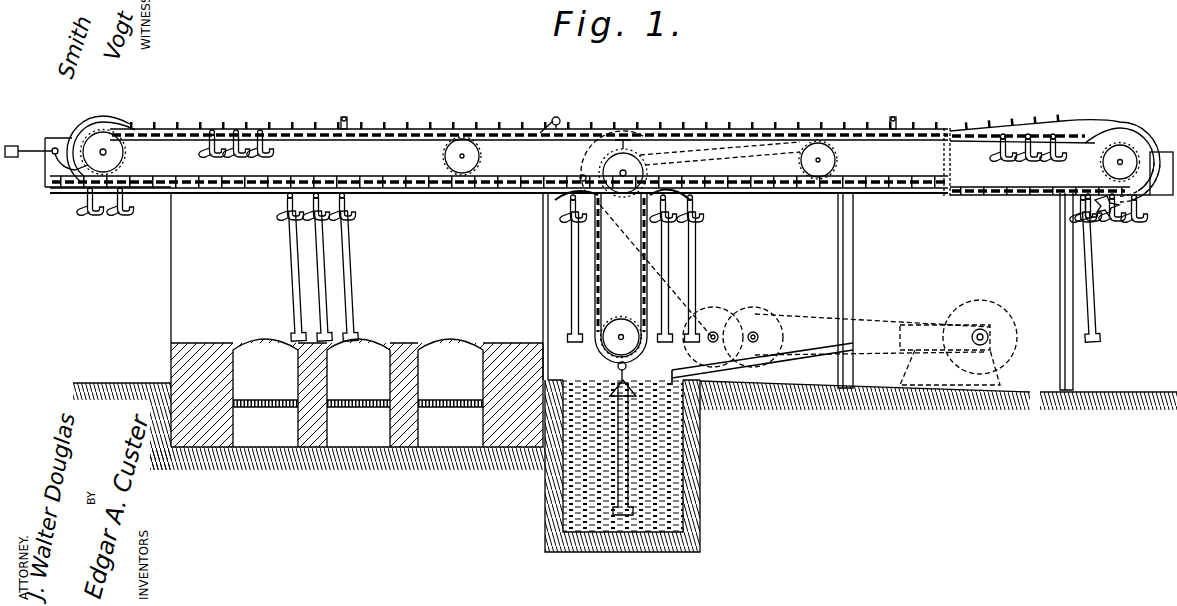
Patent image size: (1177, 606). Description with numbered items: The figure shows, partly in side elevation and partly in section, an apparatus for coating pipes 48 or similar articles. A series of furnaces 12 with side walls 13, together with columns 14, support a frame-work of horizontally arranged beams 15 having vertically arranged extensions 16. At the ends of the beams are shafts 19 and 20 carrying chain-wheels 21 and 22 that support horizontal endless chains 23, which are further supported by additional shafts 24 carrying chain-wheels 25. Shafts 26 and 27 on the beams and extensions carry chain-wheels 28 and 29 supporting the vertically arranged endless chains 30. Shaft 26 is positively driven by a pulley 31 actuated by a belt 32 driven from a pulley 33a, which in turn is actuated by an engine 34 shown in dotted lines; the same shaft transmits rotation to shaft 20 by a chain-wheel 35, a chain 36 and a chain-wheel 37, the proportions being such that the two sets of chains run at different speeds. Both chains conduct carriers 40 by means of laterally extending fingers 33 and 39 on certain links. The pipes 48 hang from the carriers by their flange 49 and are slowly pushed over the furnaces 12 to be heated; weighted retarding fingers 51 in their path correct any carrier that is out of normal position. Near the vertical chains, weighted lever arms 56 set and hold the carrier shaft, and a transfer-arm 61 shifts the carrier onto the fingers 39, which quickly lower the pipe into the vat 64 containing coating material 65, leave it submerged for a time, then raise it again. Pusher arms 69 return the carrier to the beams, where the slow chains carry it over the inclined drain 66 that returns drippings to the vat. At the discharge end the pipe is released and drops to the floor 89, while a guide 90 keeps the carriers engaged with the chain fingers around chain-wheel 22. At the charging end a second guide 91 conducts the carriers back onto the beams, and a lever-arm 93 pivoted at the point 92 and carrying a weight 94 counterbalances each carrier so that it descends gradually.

The furnaces 12 is at (430, 442).
The side walls 13 is at (171, 296).
The columns 14 is at (852, 273).
The beams 15 is at (406, 190).
The extensions 16 is at (596, 263).
The shaft 19 is at (104, 149).
The shaft 20 is at (1124, 158).
The chain-wheels 21 is at (118, 152).
The chain-wheels 22 is at (1138, 196).
The endless chains 23 is at (363, 176).
The additional shafts 24 is at (448, 157).
The chain-wheels 25 is at (480, 157).
The shaft 26 is at (598, 159).
The shaft 27 is at (614, 341).
The chain-wheels 28 is at (662, 174).
The chain-wheels 29 is at (630, 345).
The endless chains 30 is at (638, 307).
The pulley 31 is at (658, 152).
The belt 32 is at (694, 248).
The fingers 33 is at (263, 184).
The pulley 33a is at (716, 332).
The engine 34 is at (913, 332).
The chain-wheel 35 is at (636, 163).
The chain 36 is at (737, 190).
The chain-wheel 37 is at (1110, 123).
The fingers 39 is at (600, 288).
The carriers 40 is at (262, 129).
The pipes 48 is at (325, 280).
The flange 49 is at (318, 214).
The retarding fingers 51 is at (560, 127).
The lever arms 56 is at (592, 216).
The transfer-arm 61 is at (575, 204).
The vat 64 is at (563, 493).
The coating material 65 is at (668, 493).
The drain 66 is at (797, 363).
The pusher arms 69 is at (694, 202).
The floor 89 is at (1093, 394).
The guide 90 is at (1128, 130).
The second guide 91 is at (88, 127).
The point 92 is at (53, 154).
The lever-arm 93 is at (70, 170).
The weight 94 is at (14, 145).